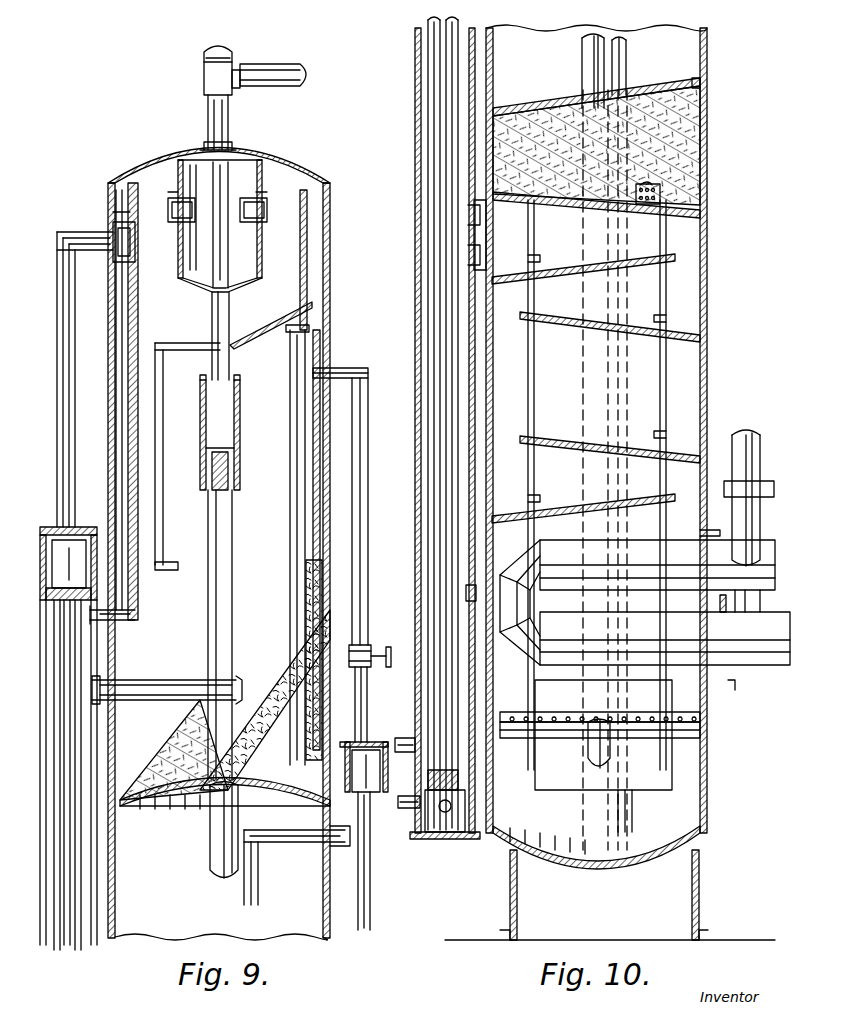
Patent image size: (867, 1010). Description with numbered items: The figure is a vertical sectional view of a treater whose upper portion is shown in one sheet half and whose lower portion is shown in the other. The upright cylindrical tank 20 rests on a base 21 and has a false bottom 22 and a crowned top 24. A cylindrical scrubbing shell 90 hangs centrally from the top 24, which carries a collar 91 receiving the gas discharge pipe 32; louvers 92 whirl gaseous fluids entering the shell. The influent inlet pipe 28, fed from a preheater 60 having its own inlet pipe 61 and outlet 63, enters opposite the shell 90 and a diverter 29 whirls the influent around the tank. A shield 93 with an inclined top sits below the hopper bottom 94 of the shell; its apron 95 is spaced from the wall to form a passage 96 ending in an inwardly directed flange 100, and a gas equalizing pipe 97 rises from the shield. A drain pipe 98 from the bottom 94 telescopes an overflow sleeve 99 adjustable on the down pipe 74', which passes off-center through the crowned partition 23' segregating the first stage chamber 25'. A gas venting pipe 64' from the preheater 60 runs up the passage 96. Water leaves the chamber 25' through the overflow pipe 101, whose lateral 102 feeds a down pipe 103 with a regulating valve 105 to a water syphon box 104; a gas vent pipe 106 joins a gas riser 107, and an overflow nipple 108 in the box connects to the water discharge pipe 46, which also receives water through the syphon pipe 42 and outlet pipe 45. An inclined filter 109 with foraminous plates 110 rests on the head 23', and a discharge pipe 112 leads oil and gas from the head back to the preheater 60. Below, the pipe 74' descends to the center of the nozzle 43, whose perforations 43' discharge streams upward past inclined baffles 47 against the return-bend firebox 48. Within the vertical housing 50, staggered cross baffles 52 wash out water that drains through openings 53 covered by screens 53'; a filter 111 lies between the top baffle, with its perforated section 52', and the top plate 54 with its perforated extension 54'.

In FIG. 9, the tank 20 is at (328, 280).
In FIG. 10, the base 21 is at (702, 893).
In FIG. 10, the false bottom 22 is at (578, 868).
In FIG. 9, the crowned partition 23' is at (225, 754).
In FIG. 9, the crowned top 24 is at (296, 154).
In FIG. 9, the separating chamber 25' is at (92, 543).
In FIG. 9, the influent inlet pipe 28 is at (77, 264).
In FIG. 9, the diverter 29 is at (119, 216).
In FIG. 9, the gas discharge pipe 32 is at (206, 104).
In FIG. 9, the syphon pipe 42 is at (264, 890).
In FIG. 10, the syphon pipe 42 is at (632, 54).
In FIG. 10, the nozzle 43 is at (625, 737).
In FIG. 10, the perforations 43' is at (638, 696).
In FIG. 9, the outlet pipe 45 is at (338, 852).
In FIG. 9, the water discharge pipe 46 is at (370, 906).
In FIG. 10, the inclined baffles 47 is at (737, 498).
In FIG. 10, the return-bend firebox 48 is at (592, 548).
In FIG. 10, the vertical housing 50 is at (670, 280).
In FIG. 10, the cross baffles 52 is at (620, 364).
In FIG. 10, the perforated section 52' is at (596, 220).
In FIG. 10, the water draining openings 53 is at (636, 332).
In FIG. 10, the screens 53' is at (696, 196).
In FIG. 10, the top plate 54 is at (596, 93).
In FIG. 10, the perforated extension 54' is at (720, 67).
In FIG. 9, the preheater 60 is at (38, 552).
In FIG. 10, the inlet pipe 61 is at (462, 840).
In FIG. 9, the outlet 63 is at (408, 724).
In FIG. 9, the gas venting pipe 64' is at (152, 401).
In FIG. 9, the down pipe 74' is at (197, 830).
In FIG. 10, the down pipe 74' is at (598, 405).
In FIG. 9, the scrubbing shell 90 is at (262, 232).
In FIG. 9, the collar 91 is at (238, 144).
In FIG. 9, the louvers 92 is at (242, 198).
In FIG. 9, the shield 93 is at (262, 302).
In FIG. 9, the hopper bottom 94 is at (211, 276).
In FIG. 9, the apron 95 is at (160, 444).
In FIG. 9, the passage 96 is at (144, 398).
In FIG. 9, the gas equalizing pipe 97 is at (300, 252).
In FIG. 9, the drain pipe 98 is at (212, 316).
In FIG. 9, the overflow sleeve 99 is at (240, 398).
In FIG. 9, the flange 100 is at (166, 560).
In FIG. 9, the overflow pipe 101 is at (320, 332).
In FIG. 9, the lateral 102 is at (350, 370).
In FIG. 9, the down pipe 103 is at (368, 422).
In FIG. 9, the water syphon box 104 is at (402, 812).
In FIG. 9, the regulating valve 105 is at (354, 646).
In FIG. 9, the gas vent pipe 106 is at (354, 722).
In FIG. 9, the gas riser 107 is at (288, 530).
In FIG. 9, the overflow nipple 108 is at (372, 796).
In FIG. 9, the inclined filter 109 is at (244, 637).
In FIG. 9, the foraminous plates 110 is at (268, 618).
In FIG. 10, the filter 111 is at (686, 134).
In FIG. 9, the discharge pipe 112 is at (174, 682).